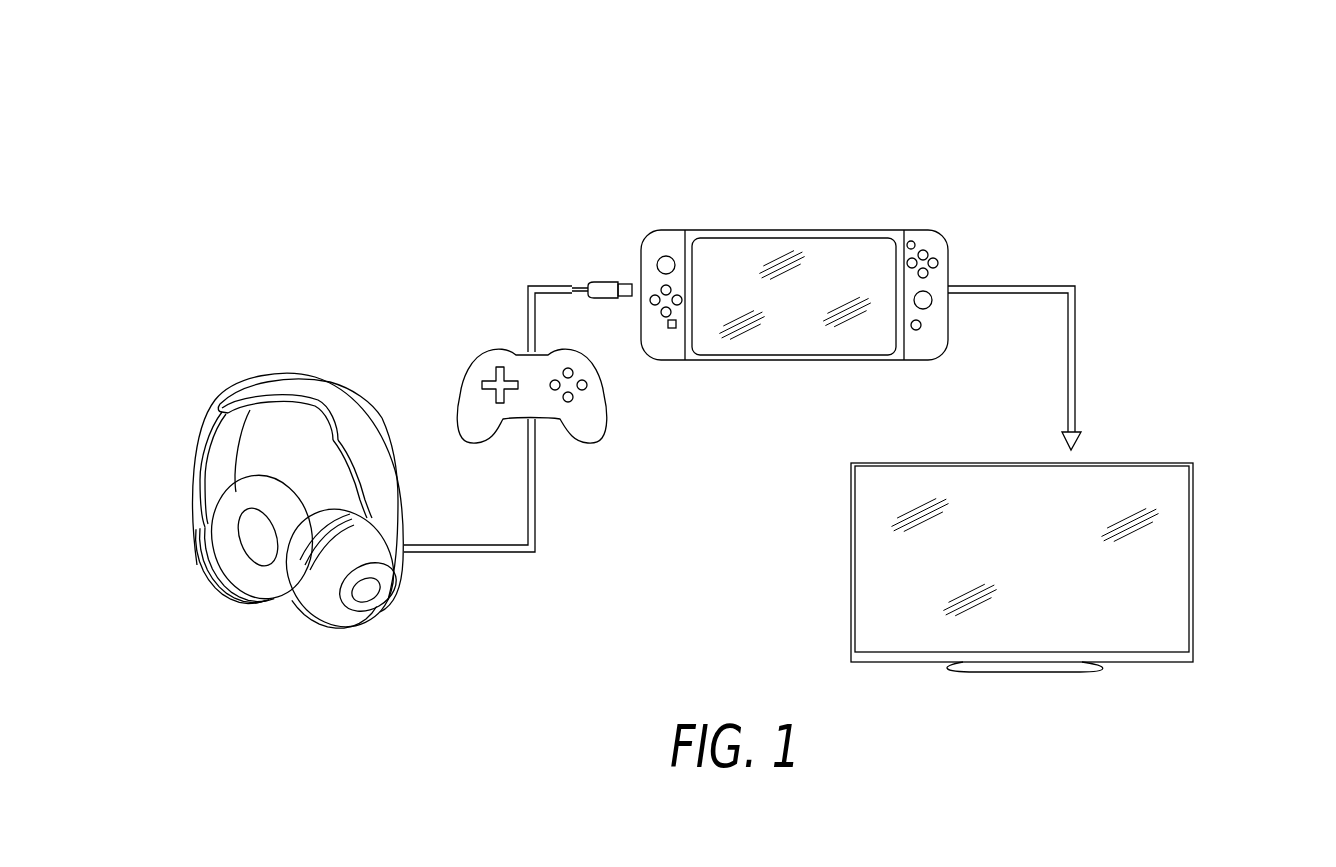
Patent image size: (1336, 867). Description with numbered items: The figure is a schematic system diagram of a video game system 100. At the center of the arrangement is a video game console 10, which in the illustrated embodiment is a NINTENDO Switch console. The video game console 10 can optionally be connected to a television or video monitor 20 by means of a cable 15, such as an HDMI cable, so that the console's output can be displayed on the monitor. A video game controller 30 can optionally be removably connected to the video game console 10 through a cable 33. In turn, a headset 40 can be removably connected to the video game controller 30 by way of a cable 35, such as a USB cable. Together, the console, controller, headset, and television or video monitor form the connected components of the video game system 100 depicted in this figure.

The video game system 100 is at (241, 127).
The video game console 10 is at (736, 164).
The cable 15 is at (1076, 352).
The television or video monitor 20 is at (1233, 452).
The video game controller 30 is at (622, 430).
The cable 33 is at (554, 284).
The cable 35 is at (457, 553).
The headset 40 is at (165, 540).